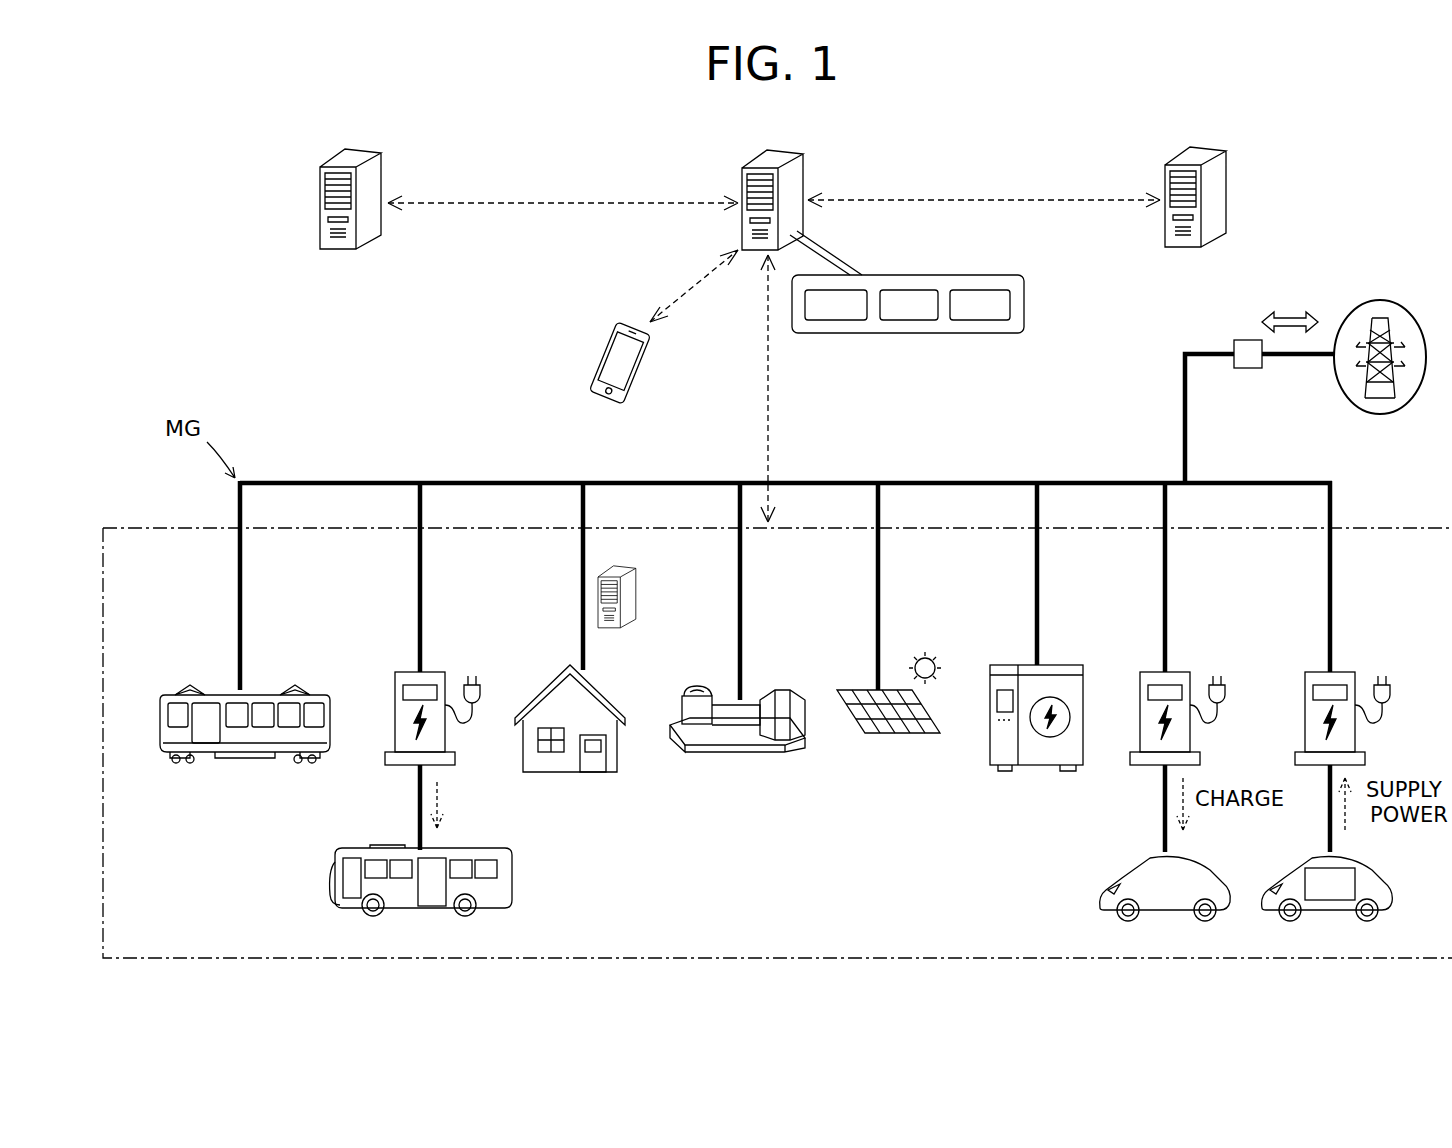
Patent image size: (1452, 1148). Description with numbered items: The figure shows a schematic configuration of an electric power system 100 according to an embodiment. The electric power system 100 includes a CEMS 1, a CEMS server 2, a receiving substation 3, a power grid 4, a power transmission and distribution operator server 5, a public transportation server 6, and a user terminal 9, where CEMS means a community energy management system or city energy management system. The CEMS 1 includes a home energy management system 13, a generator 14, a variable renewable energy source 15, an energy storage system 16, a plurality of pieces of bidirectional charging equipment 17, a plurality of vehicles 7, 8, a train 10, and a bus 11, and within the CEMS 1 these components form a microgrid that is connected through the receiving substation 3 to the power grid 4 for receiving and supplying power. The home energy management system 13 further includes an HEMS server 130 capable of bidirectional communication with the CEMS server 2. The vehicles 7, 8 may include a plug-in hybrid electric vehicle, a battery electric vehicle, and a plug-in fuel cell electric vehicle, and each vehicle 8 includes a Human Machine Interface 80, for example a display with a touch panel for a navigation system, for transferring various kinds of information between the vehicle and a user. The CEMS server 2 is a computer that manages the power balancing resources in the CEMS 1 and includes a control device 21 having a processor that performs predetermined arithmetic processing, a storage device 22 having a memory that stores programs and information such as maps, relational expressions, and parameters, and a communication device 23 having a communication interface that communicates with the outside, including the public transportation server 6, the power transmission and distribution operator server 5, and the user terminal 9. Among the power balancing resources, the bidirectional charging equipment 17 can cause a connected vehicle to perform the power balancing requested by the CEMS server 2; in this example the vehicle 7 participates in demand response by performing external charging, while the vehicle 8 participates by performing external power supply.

The electric power system 100 is at (176, 136).
The CEMS 1 is at (153, 526).
The CEMS server 2 is at (788, 150).
The control device 21 is at (836, 322).
The storage device 22 is at (908, 322).
The communication device 23 is at (980, 322).
The receiving substation 3 is at (1262, 368).
The power grid 4 is at (1398, 320).
The power transmission and distribution operator server 5 is at (1208, 150).
The public transportation server 6 is at (367, 150).
The vehicle 7 is at (1185, 856).
The vehicle 8 is at (1327, 894).
The Human Machine Interface 80 is at (1336, 900).
The user terminal 9 is at (606, 330).
The train 10 is at (318, 697).
The bus 11 is at (468, 847).
The home energy management system 13 is at (605, 699).
The HEMS server 130 is at (633, 568).
The generator 14 is at (777, 686).
The variable renewable energy source 15 is at (848, 688).
The energy storage system 16 is at (1060, 666).
The bidirectional charging equipment 17 is at (438, 674).